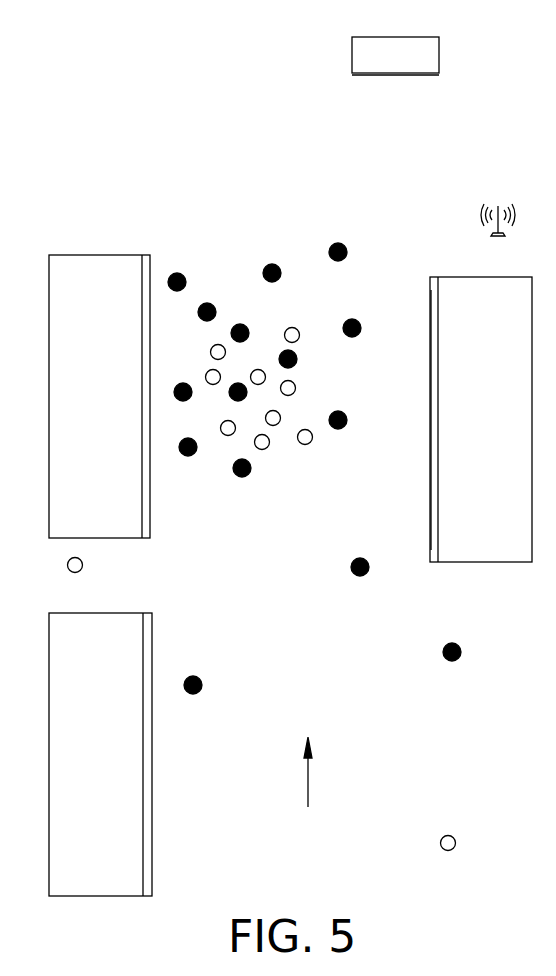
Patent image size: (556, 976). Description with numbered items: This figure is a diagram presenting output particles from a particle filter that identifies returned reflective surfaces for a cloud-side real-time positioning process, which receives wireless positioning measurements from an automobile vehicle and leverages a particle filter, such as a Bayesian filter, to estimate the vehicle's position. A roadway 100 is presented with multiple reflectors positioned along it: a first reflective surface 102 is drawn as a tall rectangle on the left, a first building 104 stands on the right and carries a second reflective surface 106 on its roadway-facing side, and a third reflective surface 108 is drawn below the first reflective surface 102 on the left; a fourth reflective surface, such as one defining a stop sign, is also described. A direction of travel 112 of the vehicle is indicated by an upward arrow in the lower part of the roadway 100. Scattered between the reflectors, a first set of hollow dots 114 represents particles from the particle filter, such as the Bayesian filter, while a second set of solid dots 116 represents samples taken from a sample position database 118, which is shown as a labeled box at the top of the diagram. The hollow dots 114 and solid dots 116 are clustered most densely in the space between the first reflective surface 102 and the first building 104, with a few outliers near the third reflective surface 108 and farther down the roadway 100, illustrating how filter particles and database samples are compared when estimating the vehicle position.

The roadway 100 is at (357, 715).
The first reflective surface 102 is at (150, 525).
The first building 104 is at (502, 429).
The second reflective surface 106 is at (431, 513).
The third reflective surface 108 is at (147, 757).
The direction of travel 112 is at (310, 783).
The first set of hollow dots 114 is at (296, 327).
The second set of solid dots 116 is at (272, 264).
The sample position database 118 is at (412, 68).